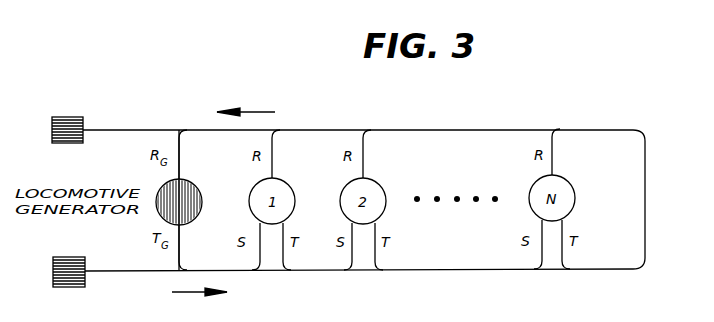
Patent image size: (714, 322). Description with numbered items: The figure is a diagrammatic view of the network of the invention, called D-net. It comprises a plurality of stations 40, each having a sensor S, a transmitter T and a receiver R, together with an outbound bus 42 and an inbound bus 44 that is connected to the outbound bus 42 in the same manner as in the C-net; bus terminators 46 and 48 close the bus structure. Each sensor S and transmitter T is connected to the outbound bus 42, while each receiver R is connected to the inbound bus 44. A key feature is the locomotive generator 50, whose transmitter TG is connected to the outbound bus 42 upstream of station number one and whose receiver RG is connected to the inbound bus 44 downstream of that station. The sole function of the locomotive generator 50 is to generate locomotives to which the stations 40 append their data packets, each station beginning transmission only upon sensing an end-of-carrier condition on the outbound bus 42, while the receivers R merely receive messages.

The stations 40 is at (284, 181).
The outbound bus 42 is at (455, 270).
The inbound bus 44 is at (458, 129).
The bus terminator 46 is at (72, 117).
The bus terminator 48 is at (67, 287).
The locomotive generator 50 is at (192, 180).